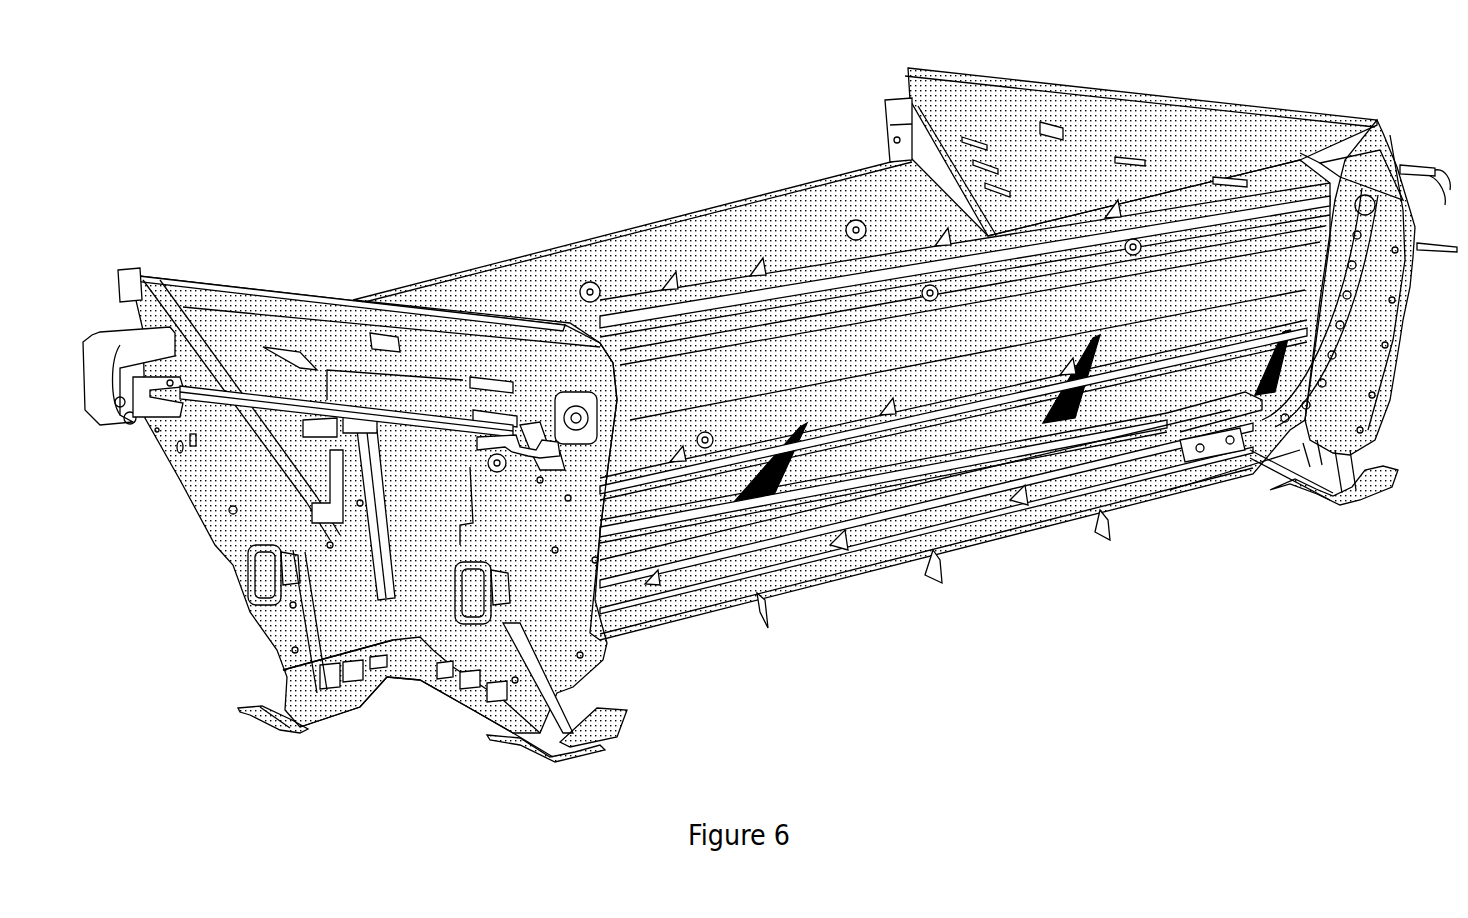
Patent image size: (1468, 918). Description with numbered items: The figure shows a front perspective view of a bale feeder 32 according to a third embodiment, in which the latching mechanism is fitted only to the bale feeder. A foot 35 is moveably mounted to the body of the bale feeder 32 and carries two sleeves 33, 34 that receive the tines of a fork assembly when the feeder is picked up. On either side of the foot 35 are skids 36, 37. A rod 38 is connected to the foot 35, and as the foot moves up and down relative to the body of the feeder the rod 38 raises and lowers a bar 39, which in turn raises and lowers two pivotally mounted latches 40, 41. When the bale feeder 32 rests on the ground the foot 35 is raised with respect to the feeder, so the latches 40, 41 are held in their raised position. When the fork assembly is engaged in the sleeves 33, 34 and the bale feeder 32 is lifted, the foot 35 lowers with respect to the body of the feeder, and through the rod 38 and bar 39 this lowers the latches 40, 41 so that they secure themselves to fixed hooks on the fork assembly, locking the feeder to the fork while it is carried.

The bale feeder 32 is at (462, 203).
The sleeve 33 is at (260, 578).
The sleeve 34 is at (482, 615).
The foot 35 is at (403, 653).
The skid 36 is at (262, 725).
The skid 37 is at (527, 752).
The rod 38 is at (363, 460).
The bar 39 is at (262, 400).
The latch 40 is at (167, 387).
The latch 41 is at (511, 424).